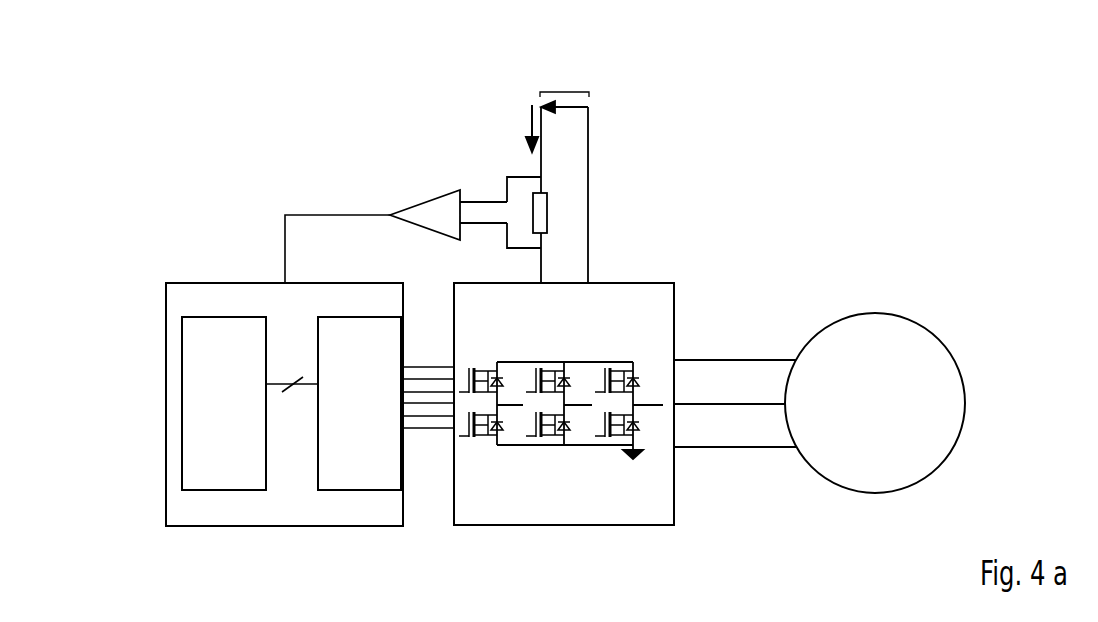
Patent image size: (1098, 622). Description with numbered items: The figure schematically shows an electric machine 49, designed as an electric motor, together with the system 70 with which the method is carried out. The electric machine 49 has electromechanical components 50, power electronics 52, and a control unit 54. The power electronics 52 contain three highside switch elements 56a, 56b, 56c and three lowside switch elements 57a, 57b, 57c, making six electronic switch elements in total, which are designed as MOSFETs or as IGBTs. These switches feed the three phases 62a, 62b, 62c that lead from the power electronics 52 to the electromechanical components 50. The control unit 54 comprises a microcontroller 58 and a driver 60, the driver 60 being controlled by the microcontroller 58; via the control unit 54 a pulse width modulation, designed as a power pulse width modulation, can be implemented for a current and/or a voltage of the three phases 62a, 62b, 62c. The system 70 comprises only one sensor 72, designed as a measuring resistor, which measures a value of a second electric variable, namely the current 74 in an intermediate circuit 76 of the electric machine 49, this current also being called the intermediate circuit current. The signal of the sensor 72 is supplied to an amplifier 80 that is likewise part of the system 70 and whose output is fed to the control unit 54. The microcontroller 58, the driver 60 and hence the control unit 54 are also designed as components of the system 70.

The electric machine 49 is at (941, 284).
The electromechanical components 50 is at (887, 414).
The power electronics 52 is at (575, 526).
The control unit 54 is at (287, 527).
The highside switch element 56a is at (483, 360).
The highside switch element 56b is at (550, 360).
The highside switch element 56c is at (618, 360).
The lowside switch element 57a is at (486, 446).
The lowside switch element 57b is at (551, 446).
The lowside switch element 57c is at (625, 446).
The microcontroller 58 is at (233, 413).
The driver 60 is at (375, 413).
The phase 62a is at (708, 359).
The phase 62b is at (752, 403).
The phase 62c is at (738, 448).
The system 70 is at (382, 126).
The sensor 72 is at (548, 213).
The current 74 is at (529, 126).
The intermediate circuit 76 is at (566, 88).
The amplifier 80 is at (431, 192).